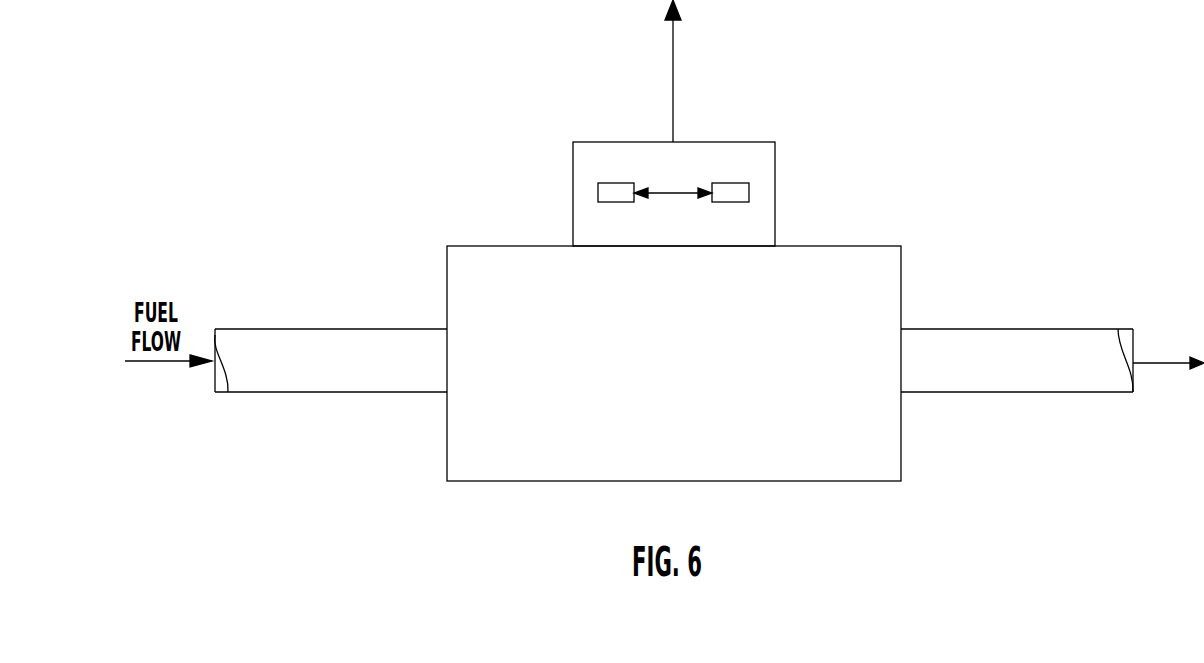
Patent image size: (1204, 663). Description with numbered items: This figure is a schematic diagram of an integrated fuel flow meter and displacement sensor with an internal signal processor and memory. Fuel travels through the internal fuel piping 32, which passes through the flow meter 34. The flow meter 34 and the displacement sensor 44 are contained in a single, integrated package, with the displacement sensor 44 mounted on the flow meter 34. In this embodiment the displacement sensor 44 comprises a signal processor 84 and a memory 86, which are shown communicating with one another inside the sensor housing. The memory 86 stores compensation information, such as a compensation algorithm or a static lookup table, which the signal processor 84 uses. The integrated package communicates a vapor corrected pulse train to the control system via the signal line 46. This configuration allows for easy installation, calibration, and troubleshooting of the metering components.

The internal fuel piping 32 is at (332, 329).
The flow meter 34 is at (665, 363).
The displacement sensor 44 is at (573, 209).
The signal line 46 is at (673, 92).
The signal processor 84 is at (616, 183).
The memory 86 is at (741, 183).